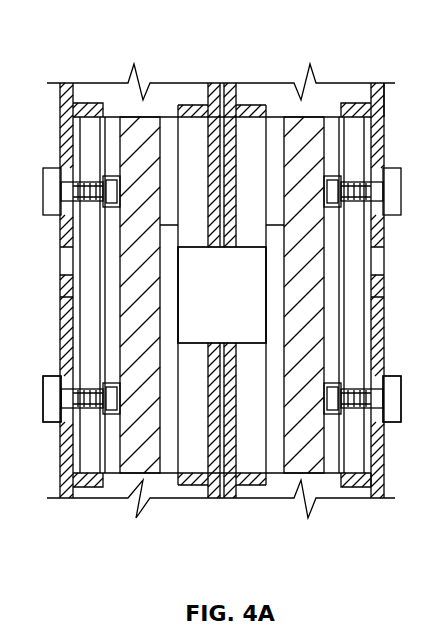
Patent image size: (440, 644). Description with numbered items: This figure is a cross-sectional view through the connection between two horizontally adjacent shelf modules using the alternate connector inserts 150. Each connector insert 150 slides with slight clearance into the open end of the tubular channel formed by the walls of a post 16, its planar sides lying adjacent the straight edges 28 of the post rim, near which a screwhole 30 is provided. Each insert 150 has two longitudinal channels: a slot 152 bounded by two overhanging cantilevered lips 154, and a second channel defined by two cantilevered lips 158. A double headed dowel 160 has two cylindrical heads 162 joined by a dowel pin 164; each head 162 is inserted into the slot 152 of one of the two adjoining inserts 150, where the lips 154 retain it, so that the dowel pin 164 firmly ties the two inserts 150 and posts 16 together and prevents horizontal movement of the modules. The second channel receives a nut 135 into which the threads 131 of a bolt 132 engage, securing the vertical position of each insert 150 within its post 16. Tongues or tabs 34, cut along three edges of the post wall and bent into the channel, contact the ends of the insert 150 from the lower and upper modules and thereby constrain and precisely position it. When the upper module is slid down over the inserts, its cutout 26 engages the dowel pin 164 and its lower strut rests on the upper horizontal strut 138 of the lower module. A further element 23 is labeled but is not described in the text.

The post 16 is at (60, 166).
The housing end 23 is at (395, 128).
The cutout 26 is at (66, 258).
The edge 28 is at (66, 280).
The screwhole 30 is at (43, 200).
The tongue 34 is at (96, 103).
The threads 131 is at (88, 387).
The bolt 132 is at (53, 400).
The nut 135 is at (108, 413).
The upper horizontal strut 138 is at (392, 462).
The connector insert 150 is at (132, 104).
The slot 152 is at (170, 152).
The cantilevered lip 154 is at (195, 182).
The cantilevered lip 158 is at (355, 150).
The double headed dowel 160 is at (248, 238).
The head 162 is at (170, 352).
The dowel pin 164 is at (232, 293).